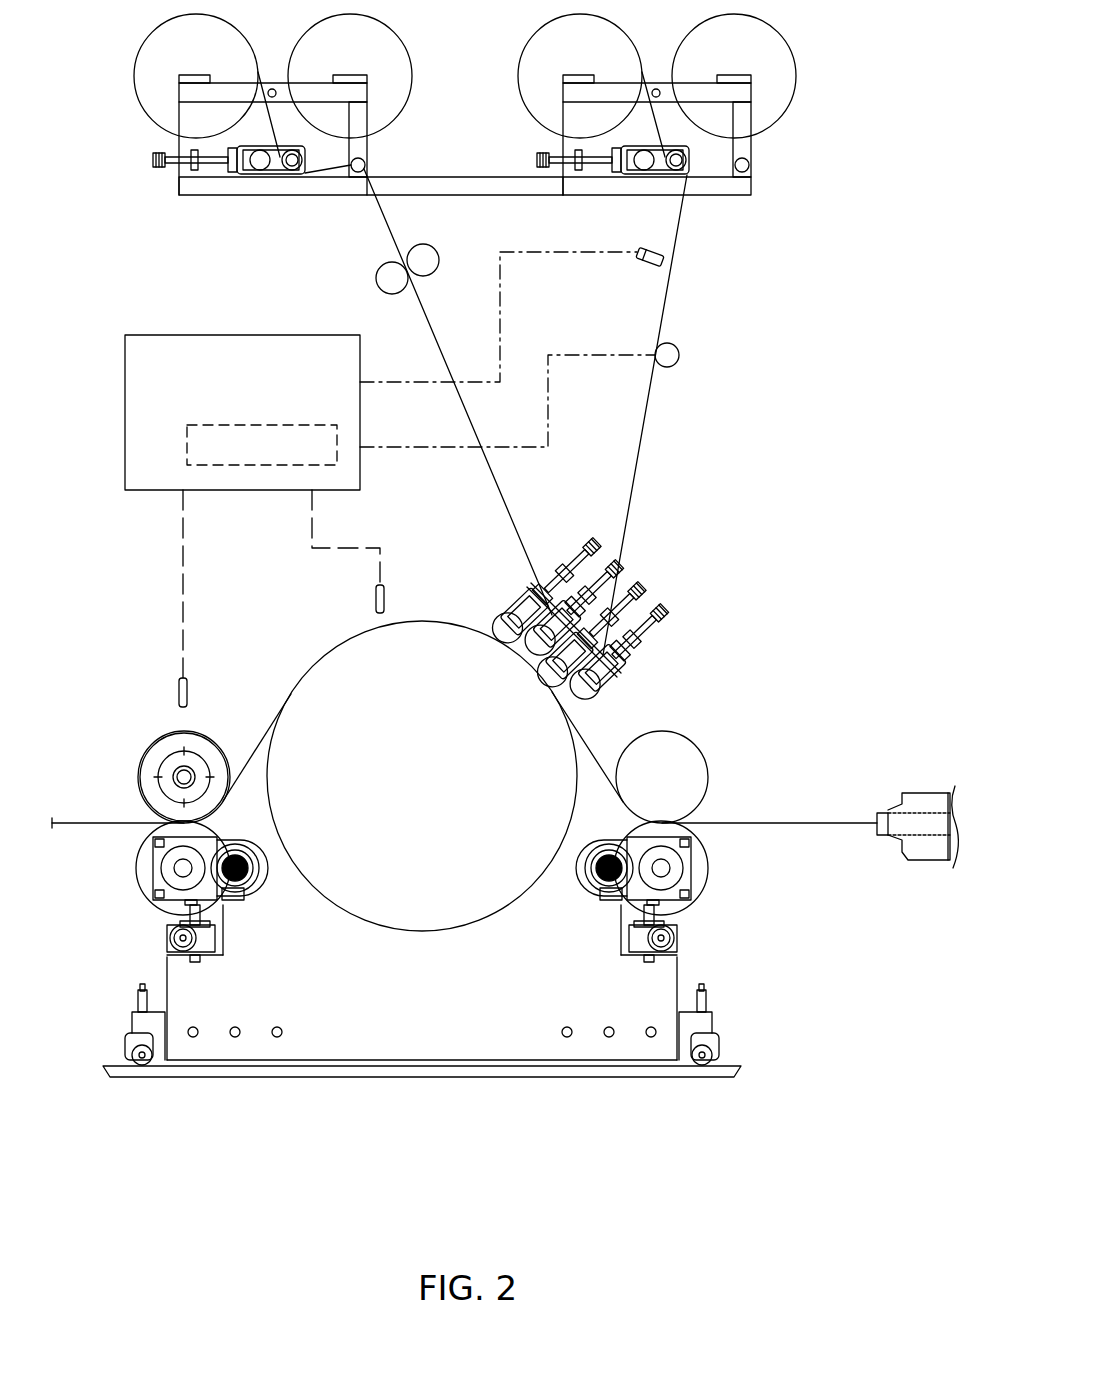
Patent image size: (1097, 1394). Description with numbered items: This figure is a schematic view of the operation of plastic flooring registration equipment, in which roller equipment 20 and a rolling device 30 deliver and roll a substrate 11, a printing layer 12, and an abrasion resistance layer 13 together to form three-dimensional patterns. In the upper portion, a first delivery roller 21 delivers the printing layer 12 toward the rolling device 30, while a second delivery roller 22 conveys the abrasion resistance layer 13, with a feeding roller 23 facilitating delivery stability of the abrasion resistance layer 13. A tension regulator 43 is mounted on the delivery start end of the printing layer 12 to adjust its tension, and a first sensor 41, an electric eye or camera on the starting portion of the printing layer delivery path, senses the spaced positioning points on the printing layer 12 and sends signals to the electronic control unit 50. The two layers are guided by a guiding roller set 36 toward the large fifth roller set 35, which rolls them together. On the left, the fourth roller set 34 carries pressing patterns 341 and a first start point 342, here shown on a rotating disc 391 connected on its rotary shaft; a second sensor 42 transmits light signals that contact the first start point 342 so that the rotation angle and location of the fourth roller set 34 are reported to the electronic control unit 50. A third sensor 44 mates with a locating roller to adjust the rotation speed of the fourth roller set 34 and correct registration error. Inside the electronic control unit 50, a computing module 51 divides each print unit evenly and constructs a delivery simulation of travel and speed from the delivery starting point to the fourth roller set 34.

The substrate 11 is at (792, 823).
The printing layer 12 is at (677, 237).
The abrasion resistance layer 13 is at (387, 222).
The roller equipment 20 is at (840, 339).
The first delivery roller 21 is at (745, 147).
The second delivery roller 22 is at (185, 142).
The feeding roller 23 is at (395, 280).
The rolling device 30 is at (400, 1035).
The fourth roller set 34 is at (150, 760).
The pressing patterns 341 is at (140, 775).
The first start point 342 is at (193, 758).
The rotating disc 391 is at (163, 768).
The fifth roller set 35 is at (367, 927).
The guiding roller set 36 is at (670, 576).
The first sensor 41 is at (647, 262).
The second sensor 42 is at (180, 690).
The tension regulator 43 is at (673, 360).
The third sensor 44 is at (375, 605).
The electronic control unit 50 is at (137, 417).
The computing module 51 is at (332, 453).